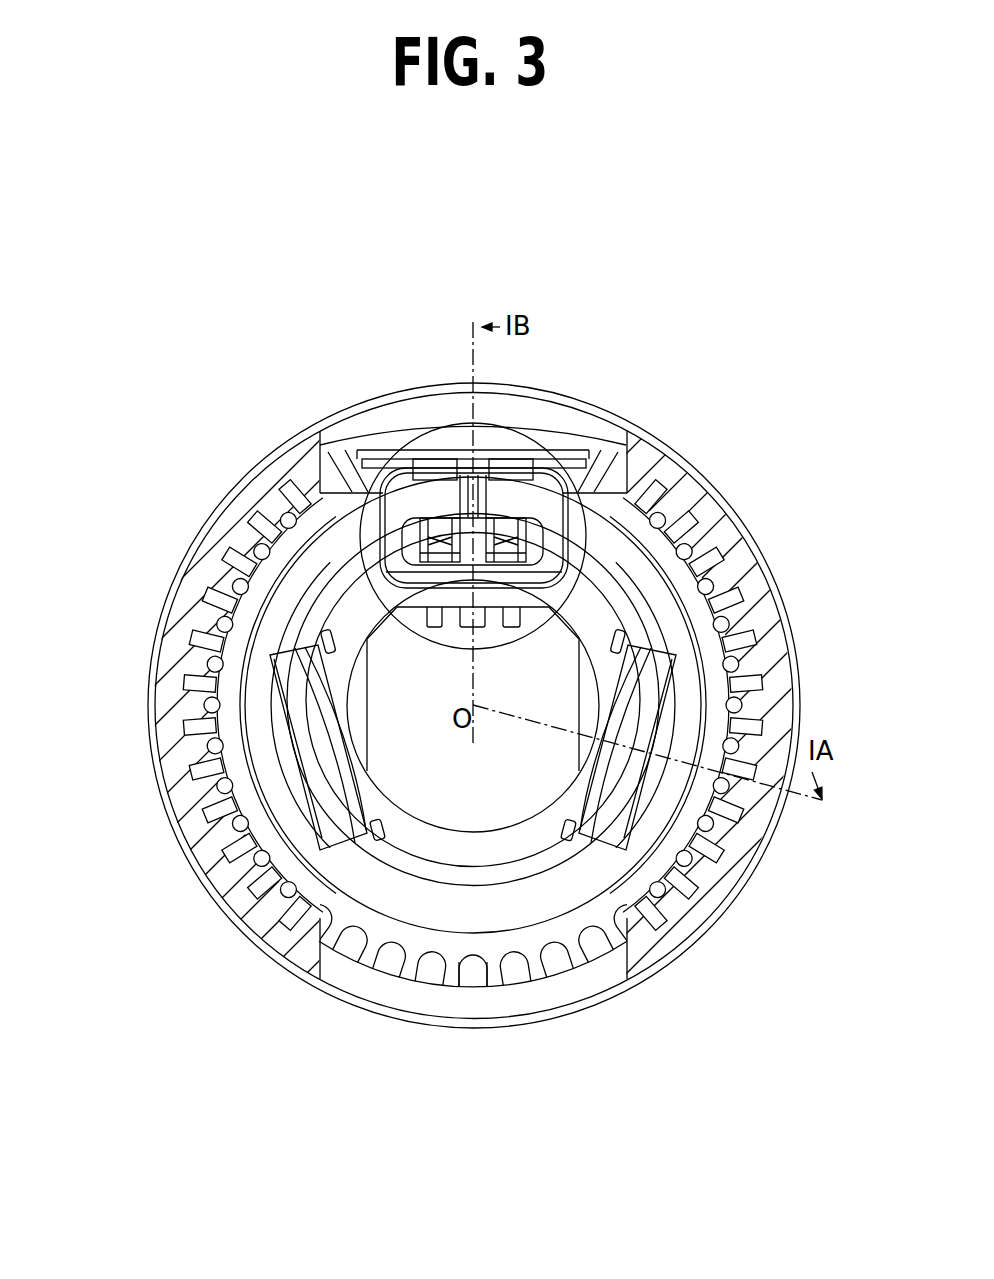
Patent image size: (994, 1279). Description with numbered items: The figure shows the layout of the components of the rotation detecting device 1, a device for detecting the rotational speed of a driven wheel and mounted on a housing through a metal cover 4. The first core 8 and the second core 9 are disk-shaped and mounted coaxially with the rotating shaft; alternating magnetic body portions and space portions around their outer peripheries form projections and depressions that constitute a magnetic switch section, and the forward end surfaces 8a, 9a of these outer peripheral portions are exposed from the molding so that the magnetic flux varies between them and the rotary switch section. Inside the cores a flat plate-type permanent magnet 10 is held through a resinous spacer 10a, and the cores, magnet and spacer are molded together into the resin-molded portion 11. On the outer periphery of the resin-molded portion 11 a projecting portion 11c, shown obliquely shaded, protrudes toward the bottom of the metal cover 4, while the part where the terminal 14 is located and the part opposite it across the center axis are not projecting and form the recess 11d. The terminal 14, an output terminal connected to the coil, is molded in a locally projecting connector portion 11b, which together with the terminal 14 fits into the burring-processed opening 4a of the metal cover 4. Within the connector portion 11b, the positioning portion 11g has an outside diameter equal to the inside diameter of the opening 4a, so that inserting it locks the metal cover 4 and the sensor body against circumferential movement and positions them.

The rotation detecting device 1 is at (253, 415).
The metal cover 4 is at (603, 436).
The opening 4a is at (512, 436).
The first core 8 is at (473, 983).
The second core 9 is at (468, 988).
The forward end surface 8a is at (520, 1044).
The forward end surface 9a is at (495, 986).
The permanent magnet 10 is at (275, 823).
The resinous spacer 10a is at (410, 835).
The resin-molded portion 11 is at (565, 983).
The connector portion 11b is at (418, 606).
The projecting portion 11c is at (683, 480).
The recess 11d is at (615, 432).
The positioning portion 11g is at (457, 605).
The terminal 14 is at (450, 518).